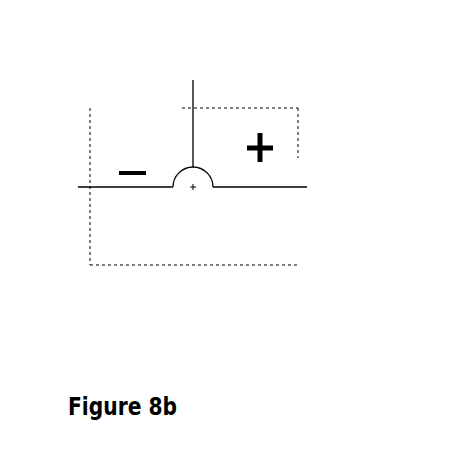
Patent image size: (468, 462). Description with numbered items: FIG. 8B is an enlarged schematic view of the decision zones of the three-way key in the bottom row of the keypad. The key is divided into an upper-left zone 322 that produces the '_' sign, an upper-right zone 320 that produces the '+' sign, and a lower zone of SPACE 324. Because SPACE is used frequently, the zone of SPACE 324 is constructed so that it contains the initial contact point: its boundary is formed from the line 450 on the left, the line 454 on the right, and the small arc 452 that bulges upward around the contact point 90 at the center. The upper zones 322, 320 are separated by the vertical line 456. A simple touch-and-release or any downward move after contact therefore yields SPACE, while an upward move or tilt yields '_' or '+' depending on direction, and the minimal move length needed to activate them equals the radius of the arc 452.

The cursor / pointer position marker 90 is at (208, 191).
The '+' zone 320 is at (234, 126).
The '_' zone 322 is at (134, 131).
The zone of SPACE 324 is at (192, 259).
The line 450 is at (79, 182).
The small arc 452 is at (181, 187).
The line 454 is at (307, 182).
The vertical boundary line 456 is at (192, 73).